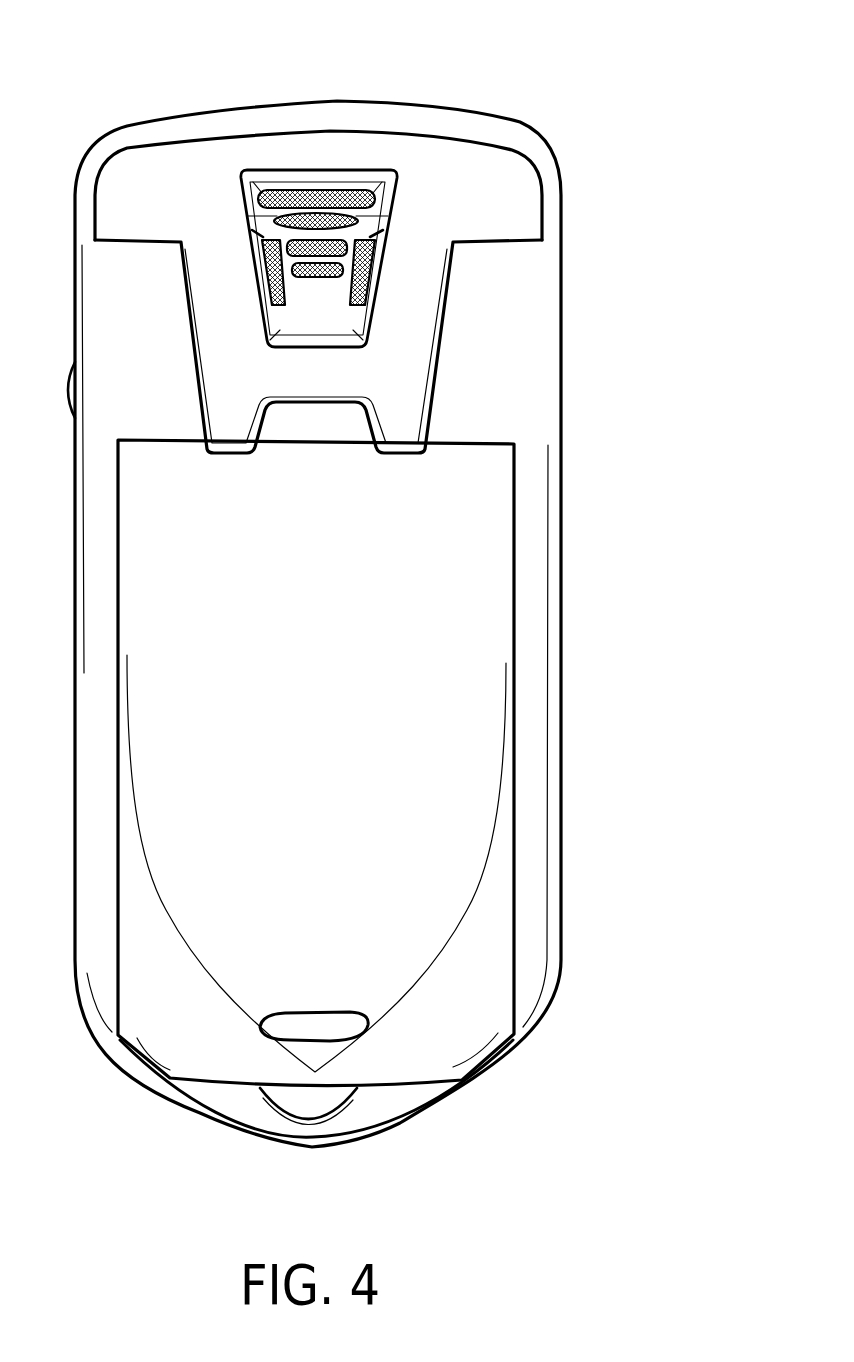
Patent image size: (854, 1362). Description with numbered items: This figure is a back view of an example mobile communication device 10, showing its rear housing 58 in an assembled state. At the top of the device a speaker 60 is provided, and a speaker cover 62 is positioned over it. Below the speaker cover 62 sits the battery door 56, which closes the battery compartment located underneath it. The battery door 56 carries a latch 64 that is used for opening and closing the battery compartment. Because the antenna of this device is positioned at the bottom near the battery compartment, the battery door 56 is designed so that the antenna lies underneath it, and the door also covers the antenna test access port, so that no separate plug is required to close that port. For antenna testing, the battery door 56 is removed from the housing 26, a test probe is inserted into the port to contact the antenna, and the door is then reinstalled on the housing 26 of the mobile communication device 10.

The mobile communication device 10 is at (699, 92).
The housing 26 is at (567, 402).
The rear housing 58 is at (552, 297).
The speaker cover 62 is at (493, 165).
The speaker 60 is at (352, 186).
The battery door 56 is at (497, 700).
The latch 64 is at (335, 1022).